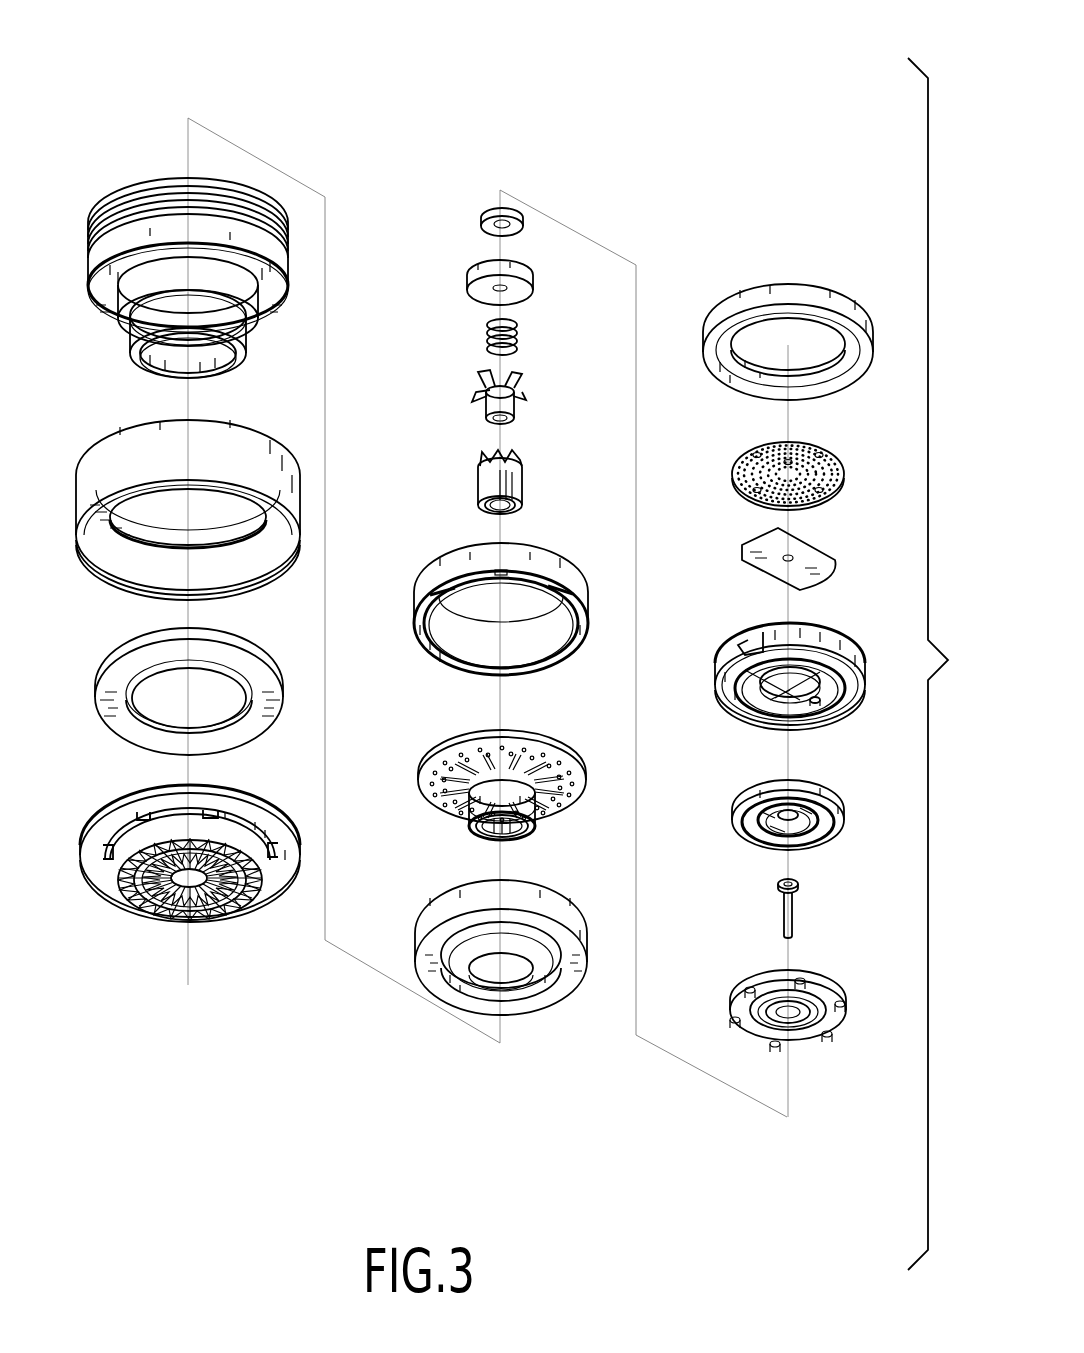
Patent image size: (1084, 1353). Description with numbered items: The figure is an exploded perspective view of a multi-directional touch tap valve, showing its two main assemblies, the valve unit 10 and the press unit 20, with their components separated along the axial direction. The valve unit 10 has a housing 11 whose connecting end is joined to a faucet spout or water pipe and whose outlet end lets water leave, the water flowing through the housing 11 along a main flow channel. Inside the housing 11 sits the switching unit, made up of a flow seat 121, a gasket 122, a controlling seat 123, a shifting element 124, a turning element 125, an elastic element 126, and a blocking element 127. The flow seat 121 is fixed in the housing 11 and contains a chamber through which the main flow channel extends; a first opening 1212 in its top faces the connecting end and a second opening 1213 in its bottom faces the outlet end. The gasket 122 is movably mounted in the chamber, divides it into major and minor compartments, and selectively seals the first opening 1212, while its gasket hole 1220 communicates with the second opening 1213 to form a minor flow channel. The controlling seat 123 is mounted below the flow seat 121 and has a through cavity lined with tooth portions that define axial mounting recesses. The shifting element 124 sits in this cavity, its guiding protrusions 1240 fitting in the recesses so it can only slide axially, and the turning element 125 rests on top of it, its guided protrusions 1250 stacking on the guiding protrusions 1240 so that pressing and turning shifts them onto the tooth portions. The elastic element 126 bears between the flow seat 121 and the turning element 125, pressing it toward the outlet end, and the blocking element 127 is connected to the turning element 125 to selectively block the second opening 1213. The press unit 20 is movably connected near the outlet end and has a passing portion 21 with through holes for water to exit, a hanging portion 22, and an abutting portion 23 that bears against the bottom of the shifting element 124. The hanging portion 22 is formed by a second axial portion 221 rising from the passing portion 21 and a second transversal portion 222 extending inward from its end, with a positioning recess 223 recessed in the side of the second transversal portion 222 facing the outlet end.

The valve unit 10 is at (238, 73).
The housing 11 is at (146, 170).
The press unit 20 is at (142, 975).
The passing portion 21 is at (184, 872).
The hanging portion 22 is at (187, 510).
The abutting portion 23 is at (185, 880).
The second axial portion 221 is at (160, 455).
The second transversal portion 222 is at (242, 420).
The positioning recess 223 is at (268, 535).
The flow seat 121 is at (758, 659).
The gasket 122 is at (763, 848).
The controlling seat 123 is at (440, 827).
The shifting element 124 is at (445, 479).
The turning element 125 is at (448, 372).
The elastic element 126 is at (514, 334).
The blocking element 127 is at (790, 920).
The first opening 1212 is at (777, 697).
The second opening 1213 is at (795, 1015).
The gasket hole 1220 is at (813, 835).
The guiding protrusions 1240 is at (480, 457).
The guided protrusions 1250 is at (488, 376).